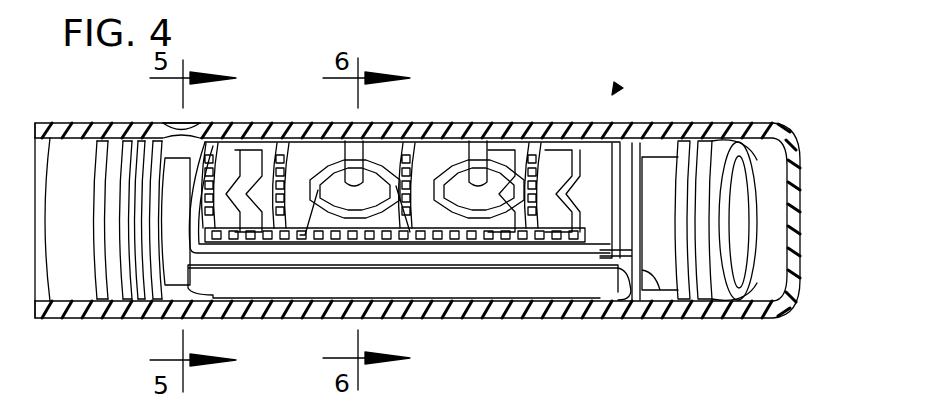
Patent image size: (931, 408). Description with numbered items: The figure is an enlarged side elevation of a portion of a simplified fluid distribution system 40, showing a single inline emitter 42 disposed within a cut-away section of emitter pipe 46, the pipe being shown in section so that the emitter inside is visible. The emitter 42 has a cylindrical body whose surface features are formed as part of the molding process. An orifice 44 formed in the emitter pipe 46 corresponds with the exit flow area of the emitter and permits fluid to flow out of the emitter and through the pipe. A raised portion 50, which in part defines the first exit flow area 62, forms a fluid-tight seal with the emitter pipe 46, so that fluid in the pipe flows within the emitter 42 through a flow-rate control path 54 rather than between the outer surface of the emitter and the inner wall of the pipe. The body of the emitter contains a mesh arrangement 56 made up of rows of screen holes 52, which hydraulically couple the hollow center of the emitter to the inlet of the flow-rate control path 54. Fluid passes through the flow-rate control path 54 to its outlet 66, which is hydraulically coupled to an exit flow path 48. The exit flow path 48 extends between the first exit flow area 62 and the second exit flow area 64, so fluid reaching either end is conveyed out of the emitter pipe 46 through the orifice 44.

The fluid distribution system 40 is at (612, 95).
The inline emitter 42 is at (90, 198).
The orifice 44 is at (175, 128).
The emitter pipe 46 is at (92, 318).
The exit flow path 48 is at (537, 254).
The raised portion 50 is at (238, 126).
The screen holes 52 is at (289, 240).
The flow-rate control path 54 is at (355, 207).
The mesh arrangement 56 is at (490, 243).
The first exit flow area 62 is at (178, 227).
The second exit flow area 64 is at (667, 229).
The outlet 66 is at (612, 253).